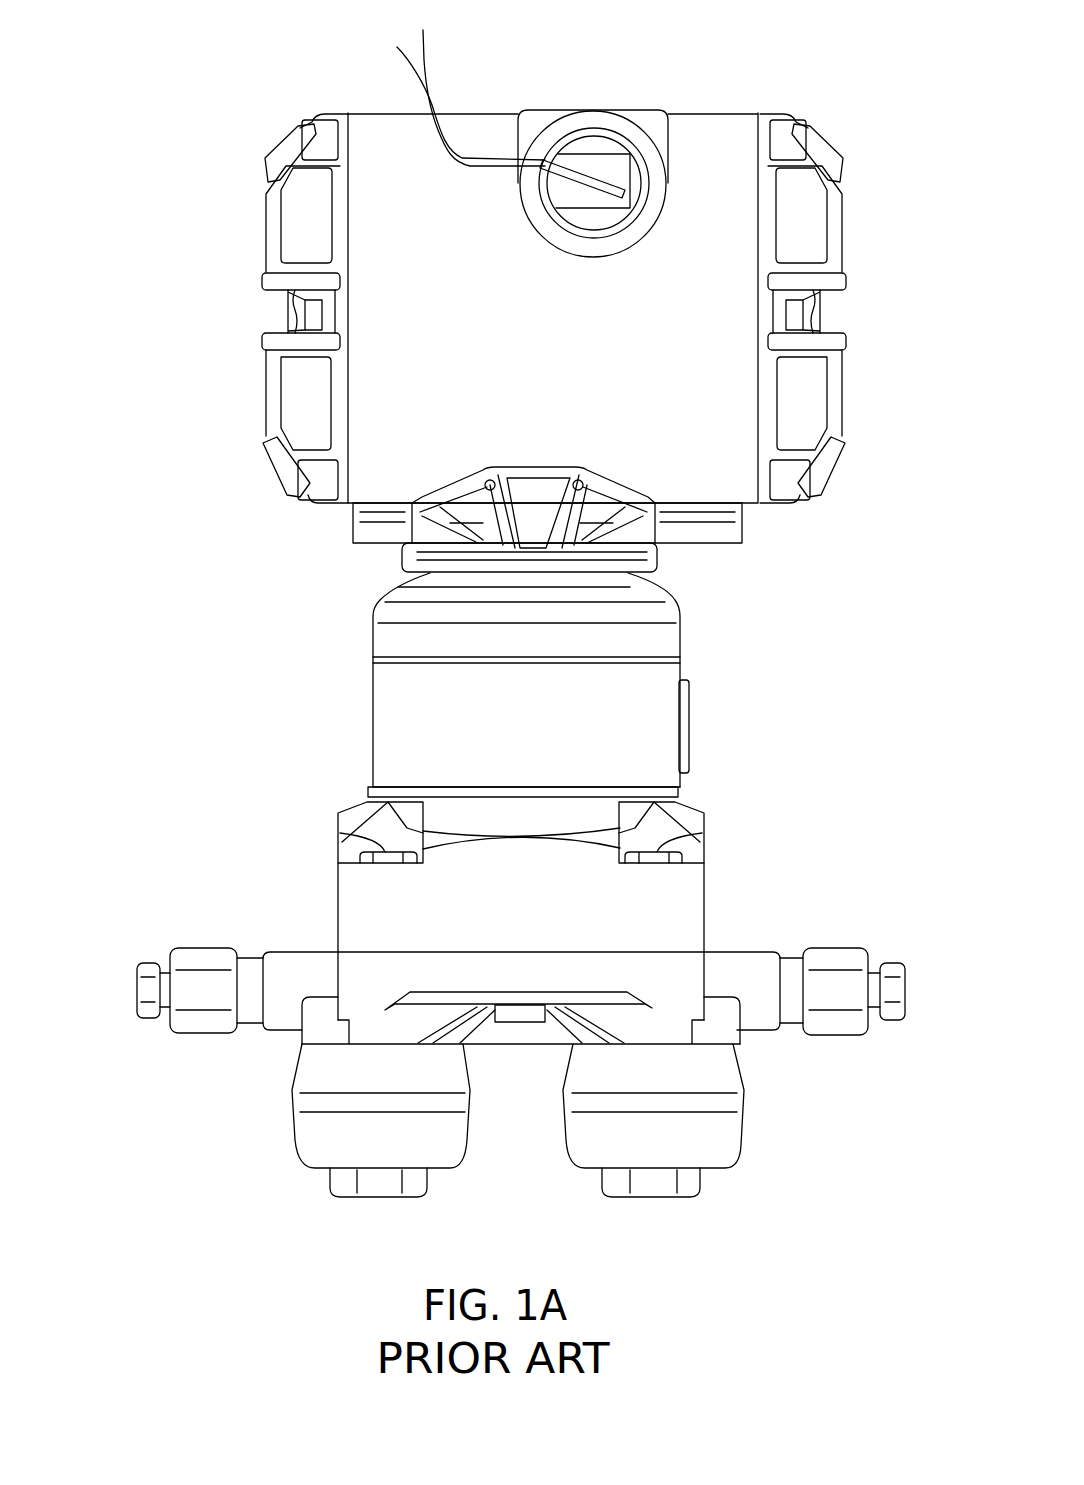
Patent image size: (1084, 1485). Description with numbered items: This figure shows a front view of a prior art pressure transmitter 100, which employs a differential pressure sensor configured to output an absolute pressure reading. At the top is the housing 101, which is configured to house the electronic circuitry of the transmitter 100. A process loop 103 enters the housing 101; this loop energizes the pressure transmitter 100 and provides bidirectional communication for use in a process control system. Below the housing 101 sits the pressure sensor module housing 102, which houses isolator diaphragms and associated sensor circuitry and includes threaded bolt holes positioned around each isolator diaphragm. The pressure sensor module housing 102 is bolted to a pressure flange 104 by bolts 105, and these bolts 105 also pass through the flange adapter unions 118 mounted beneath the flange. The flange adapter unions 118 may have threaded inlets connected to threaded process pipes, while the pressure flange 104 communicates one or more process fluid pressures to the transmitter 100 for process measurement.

The pressure transmitter 100 is at (186, 83).
The housing 101 is at (567, 341).
The pressure sensor module housing 102 is at (549, 913).
The process loop 103 is at (428, 52).
The pressure flange 104 is at (549, 986).
The bolts 105 is at (338, 822).
The flange adapter unions 118 is at (405, 1153).